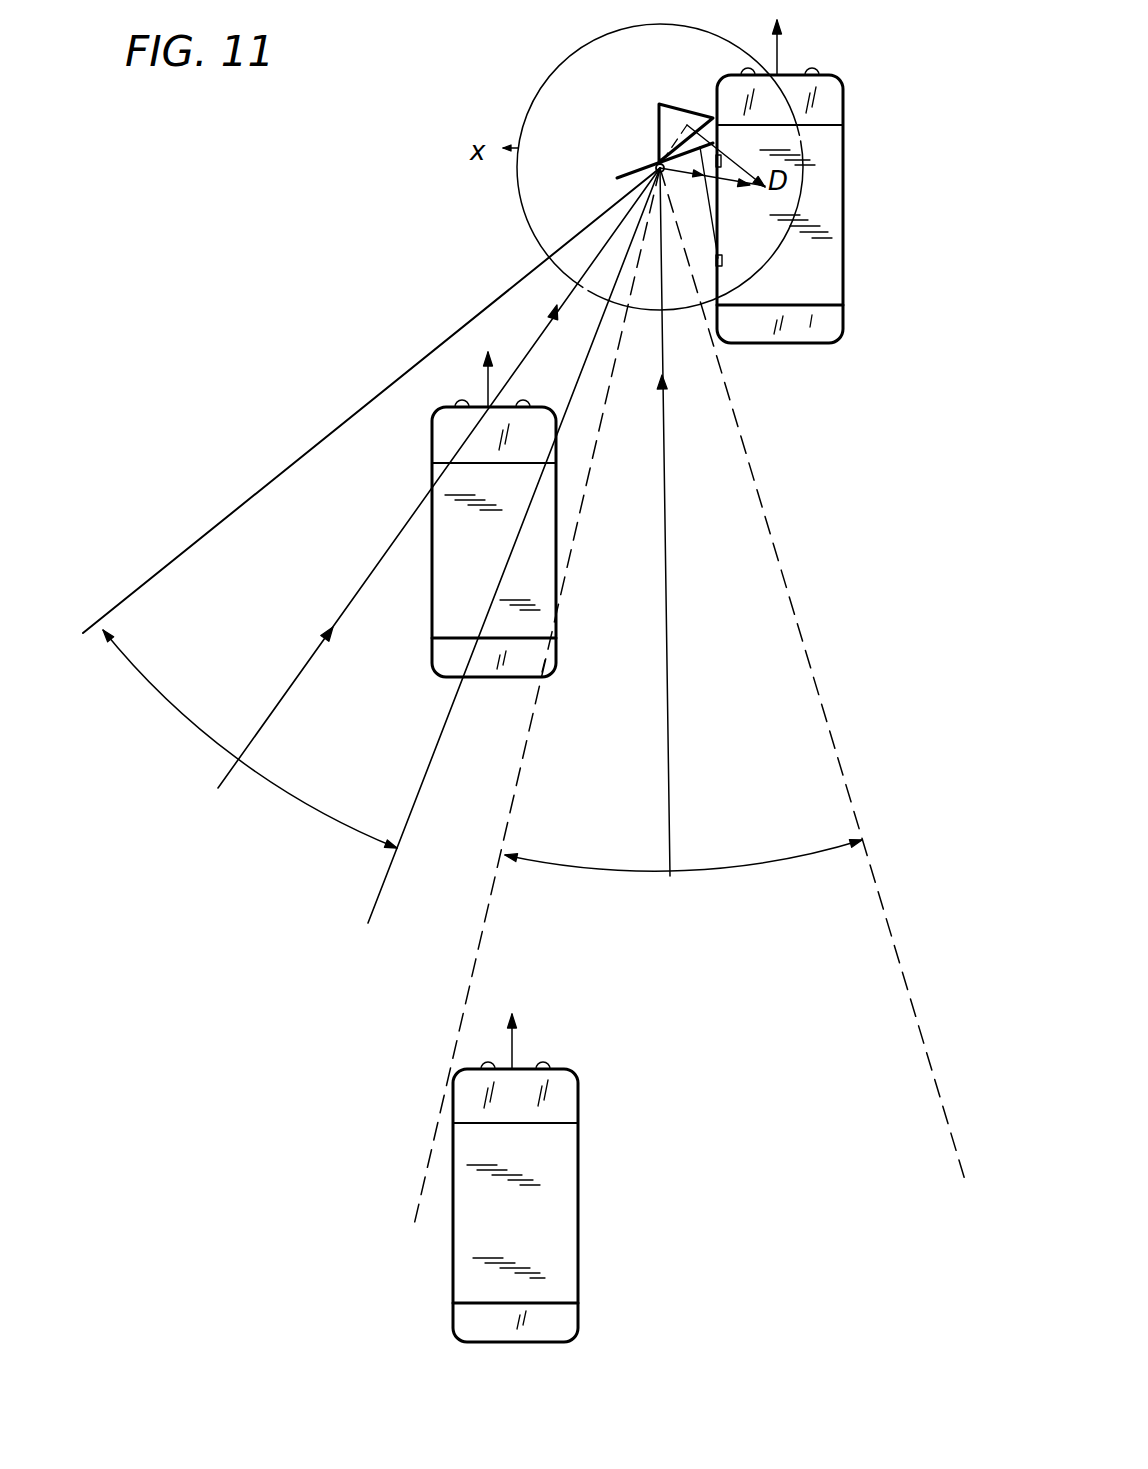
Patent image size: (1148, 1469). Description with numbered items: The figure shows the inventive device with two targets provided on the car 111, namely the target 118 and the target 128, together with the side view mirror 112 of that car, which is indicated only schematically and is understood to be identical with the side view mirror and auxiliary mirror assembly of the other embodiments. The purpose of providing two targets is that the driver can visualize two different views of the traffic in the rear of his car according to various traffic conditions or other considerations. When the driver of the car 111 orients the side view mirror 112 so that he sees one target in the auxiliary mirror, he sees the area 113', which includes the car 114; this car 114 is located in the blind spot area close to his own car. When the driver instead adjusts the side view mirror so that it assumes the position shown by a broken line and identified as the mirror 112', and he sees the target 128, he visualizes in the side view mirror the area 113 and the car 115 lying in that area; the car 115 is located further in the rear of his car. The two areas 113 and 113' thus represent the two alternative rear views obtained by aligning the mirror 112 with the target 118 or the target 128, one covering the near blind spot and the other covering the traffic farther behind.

The car 111 is at (830, 303).
The side view mirror 112 is at (669, 165).
The side view mirror in adjusted position 112' is at (695, 158).
The area 113 is at (689, 696).
The area 113' is at (371, 545).
The car 114 is at (490, 570).
The car 115 is at (520, 1240).
The target 118 is at (732, 144).
The target 128 is at (723, 260).